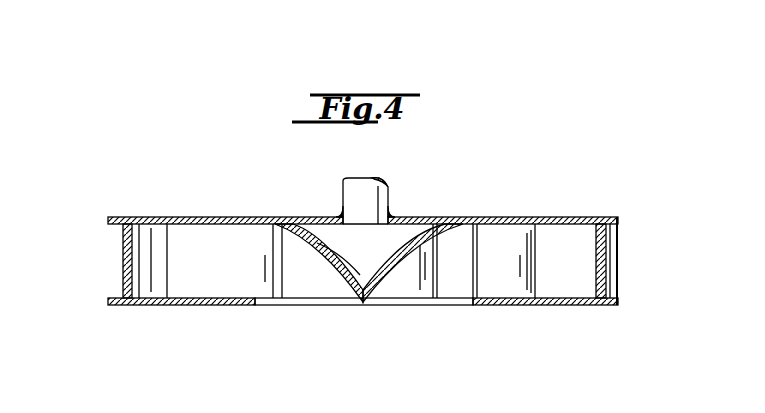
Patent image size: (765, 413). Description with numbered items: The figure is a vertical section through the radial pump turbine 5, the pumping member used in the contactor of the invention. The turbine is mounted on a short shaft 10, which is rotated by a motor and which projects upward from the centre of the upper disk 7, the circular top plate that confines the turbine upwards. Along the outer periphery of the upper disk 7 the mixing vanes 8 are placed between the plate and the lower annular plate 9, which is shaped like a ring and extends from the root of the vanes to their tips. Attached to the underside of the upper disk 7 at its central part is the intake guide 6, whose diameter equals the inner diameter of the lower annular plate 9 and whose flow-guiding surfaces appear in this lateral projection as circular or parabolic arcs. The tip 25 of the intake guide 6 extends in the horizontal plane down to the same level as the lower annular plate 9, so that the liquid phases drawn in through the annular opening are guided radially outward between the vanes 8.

The pump turbine 5 is at (262, 218).
The intake guide 6 is at (402, 250).
The upper disk 7 is at (497, 217).
The vanes 8 is at (127, 260).
The lower annular plate 9 is at (500, 305).
The shaft 10 is at (350, 192).
The tip of the guide 25 is at (363, 304).